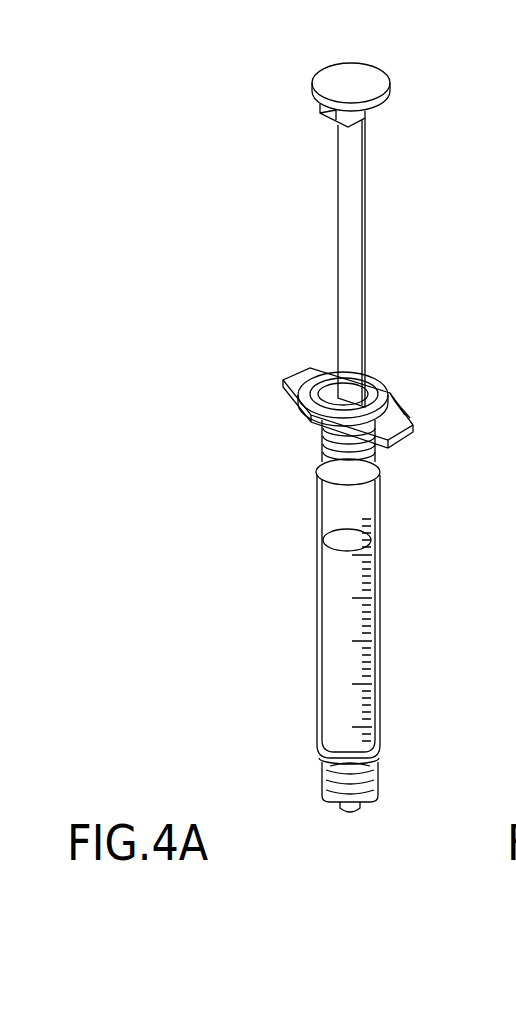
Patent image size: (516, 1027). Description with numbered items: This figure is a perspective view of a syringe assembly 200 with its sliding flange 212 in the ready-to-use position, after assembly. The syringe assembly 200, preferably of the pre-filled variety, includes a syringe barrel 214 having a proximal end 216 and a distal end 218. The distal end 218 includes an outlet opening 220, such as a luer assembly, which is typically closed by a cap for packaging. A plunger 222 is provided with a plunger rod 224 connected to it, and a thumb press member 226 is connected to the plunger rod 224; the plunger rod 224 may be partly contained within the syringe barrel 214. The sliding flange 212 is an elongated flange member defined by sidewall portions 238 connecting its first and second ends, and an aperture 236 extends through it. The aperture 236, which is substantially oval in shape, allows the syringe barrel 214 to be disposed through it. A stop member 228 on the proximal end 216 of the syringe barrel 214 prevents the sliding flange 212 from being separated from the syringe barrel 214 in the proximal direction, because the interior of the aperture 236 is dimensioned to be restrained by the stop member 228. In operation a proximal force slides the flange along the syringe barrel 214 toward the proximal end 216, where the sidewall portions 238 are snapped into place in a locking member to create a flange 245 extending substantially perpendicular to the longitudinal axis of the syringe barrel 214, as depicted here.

The syringe assembly 200 is at (233, 196).
The thumb press member 226 is at (372, 77).
The plunger rod 224 is at (350, 260).
The stop member 228 is at (318, 368).
The sliding flange 212 is at (270, 383).
The sidewall portions 238 is at (308, 414).
The flange 245 is at (400, 410).
The aperture 236 is at (405, 413).
The proximal end 216 is at (322, 456).
The plunger 222 is at (380, 462).
The syringe barrel 214 is at (318, 585).
The distal end 218 is at (328, 727).
The outlet opening 220 is at (343, 808).